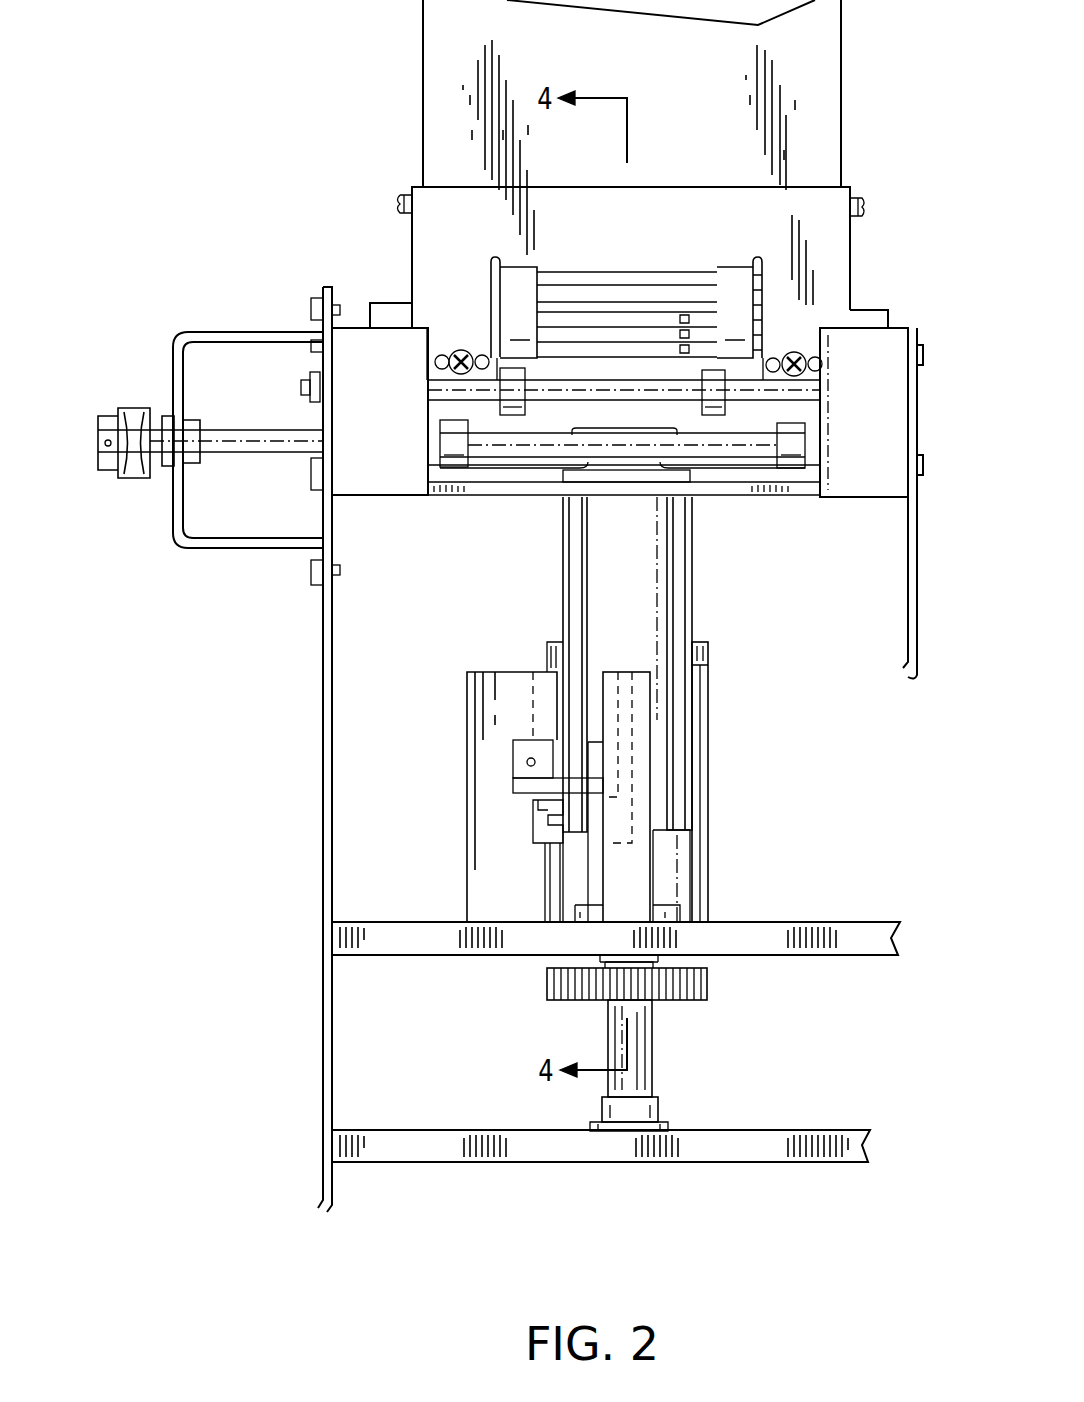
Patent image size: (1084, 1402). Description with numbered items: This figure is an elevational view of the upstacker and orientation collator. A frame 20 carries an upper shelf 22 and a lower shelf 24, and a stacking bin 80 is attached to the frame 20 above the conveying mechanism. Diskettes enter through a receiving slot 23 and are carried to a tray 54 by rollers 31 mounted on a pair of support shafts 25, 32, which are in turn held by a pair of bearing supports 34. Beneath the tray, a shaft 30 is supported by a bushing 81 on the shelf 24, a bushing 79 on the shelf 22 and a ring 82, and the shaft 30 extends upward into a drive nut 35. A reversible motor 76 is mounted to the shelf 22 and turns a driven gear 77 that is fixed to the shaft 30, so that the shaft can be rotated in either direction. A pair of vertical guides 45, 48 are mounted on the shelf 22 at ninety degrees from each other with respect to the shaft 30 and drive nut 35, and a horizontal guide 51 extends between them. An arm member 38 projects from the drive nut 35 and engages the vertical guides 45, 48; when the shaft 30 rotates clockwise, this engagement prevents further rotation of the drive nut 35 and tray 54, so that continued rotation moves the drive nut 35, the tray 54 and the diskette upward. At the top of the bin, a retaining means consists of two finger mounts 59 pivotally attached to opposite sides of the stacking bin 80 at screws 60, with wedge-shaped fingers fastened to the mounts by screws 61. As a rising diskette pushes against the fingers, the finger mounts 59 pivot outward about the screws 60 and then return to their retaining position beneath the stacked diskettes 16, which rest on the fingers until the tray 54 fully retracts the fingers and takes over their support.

The diskettes 16 is at (648, 325).
The frame 20 is at (322, 747).
The shelf 22 is at (844, 923).
The receiving slot 23 is at (550, 424).
The shelf 24 is at (736, 1162).
The support shaft 25 is at (812, 386).
The shaft 30 is at (653, 1016).
The rollers 31 is at (512, 386).
The support shaft 32 is at (258, 449).
The bearing supports 34 is at (356, 416).
The drive nut 35 is at (634, 583).
The arm member 38 is at (533, 806).
The vertical guide 45 is at (490, 672).
The vertical guide 48 is at (643, 672).
The horizontal guide 51 is at (513, 757).
The tray 54 is at (731, 471).
The finger mounts 59 is at (447, 322).
The screws 60 is at (400, 197).
The screws 61 is at (824, 356).
The reversible motor 76 is at (708, 792).
The driven gear 77 is at (547, 981).
The bushing 79 is at (599, 961).
The stacking bin 80 is at (843, 68).
The bushing 81 is at (658, 1109).
The ring 82 is at (660, 958).